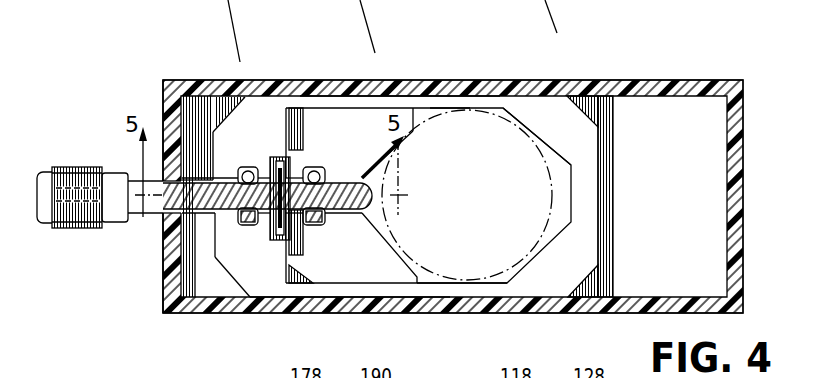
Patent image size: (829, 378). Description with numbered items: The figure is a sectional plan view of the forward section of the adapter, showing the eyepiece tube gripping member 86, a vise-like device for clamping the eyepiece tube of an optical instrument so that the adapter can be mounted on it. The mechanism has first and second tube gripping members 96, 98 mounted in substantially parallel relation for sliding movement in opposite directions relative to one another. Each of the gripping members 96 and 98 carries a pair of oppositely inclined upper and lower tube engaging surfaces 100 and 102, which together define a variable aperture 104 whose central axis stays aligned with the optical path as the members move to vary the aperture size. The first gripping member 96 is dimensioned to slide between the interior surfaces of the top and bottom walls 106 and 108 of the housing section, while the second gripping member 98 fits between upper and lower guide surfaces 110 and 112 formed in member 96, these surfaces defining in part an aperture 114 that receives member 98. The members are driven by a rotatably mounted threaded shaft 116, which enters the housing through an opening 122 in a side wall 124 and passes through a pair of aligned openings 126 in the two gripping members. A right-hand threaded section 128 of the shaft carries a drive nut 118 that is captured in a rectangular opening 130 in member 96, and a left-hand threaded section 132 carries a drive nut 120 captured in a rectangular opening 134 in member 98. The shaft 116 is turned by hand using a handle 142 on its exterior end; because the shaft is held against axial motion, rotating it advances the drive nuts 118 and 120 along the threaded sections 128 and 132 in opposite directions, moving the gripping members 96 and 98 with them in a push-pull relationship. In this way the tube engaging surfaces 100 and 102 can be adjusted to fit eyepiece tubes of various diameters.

The eyepiece tube gripping member 86 is at (186, 70).
The first tube gripping member 96 is at (557, 107).
The second tube gripping member 98 is at (280, 110).
The upper tube engaging surface 100 is at (408, 128).
The lower tube engaging surface 102 is at (400, 249).
The variable aperture 104 is at (483, 106).
The top wall 106 is at (393, 80).
The bottom wall 108 is at (316, 314).
The upper guide surface 110 is at (450, 108).
The lower guide surface 112 is at (444, 284).
The aperture 114 is at (297, 108).
The threaded shaft 116 is at (168, 204).
The gripping member drive nut 118 is at (313, 225).
The gripping member drive nut 120 is at (250, 167).
The opening 122 is at (165, 188).
The side wall 124 is at (163, 103).
The aligned openings 126 is at (220, 183).
The right-hand threaded section 128 is at (373, 207).
The rectangular opening 130 is at (307, 167).
The left-hand threaded section 132 is at (240, 213).
The rectangular opening 134 is at (273, 157).
The handle 142 is at (72, 178).